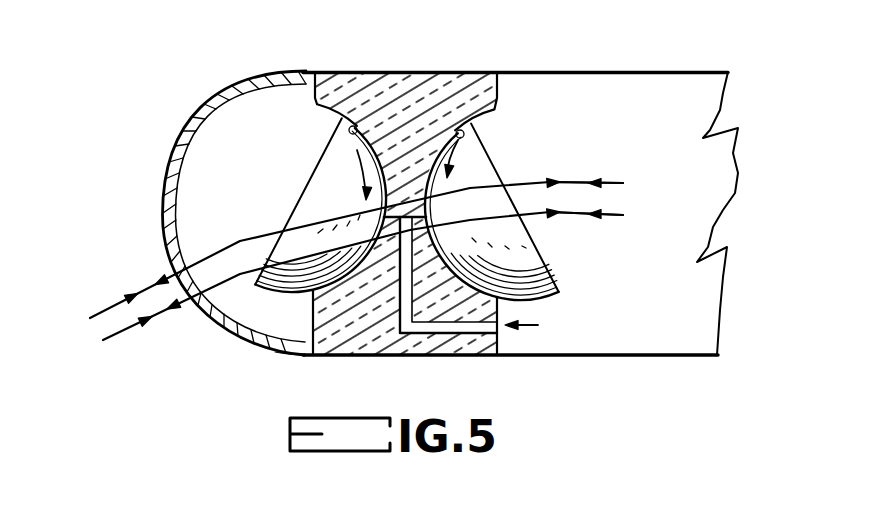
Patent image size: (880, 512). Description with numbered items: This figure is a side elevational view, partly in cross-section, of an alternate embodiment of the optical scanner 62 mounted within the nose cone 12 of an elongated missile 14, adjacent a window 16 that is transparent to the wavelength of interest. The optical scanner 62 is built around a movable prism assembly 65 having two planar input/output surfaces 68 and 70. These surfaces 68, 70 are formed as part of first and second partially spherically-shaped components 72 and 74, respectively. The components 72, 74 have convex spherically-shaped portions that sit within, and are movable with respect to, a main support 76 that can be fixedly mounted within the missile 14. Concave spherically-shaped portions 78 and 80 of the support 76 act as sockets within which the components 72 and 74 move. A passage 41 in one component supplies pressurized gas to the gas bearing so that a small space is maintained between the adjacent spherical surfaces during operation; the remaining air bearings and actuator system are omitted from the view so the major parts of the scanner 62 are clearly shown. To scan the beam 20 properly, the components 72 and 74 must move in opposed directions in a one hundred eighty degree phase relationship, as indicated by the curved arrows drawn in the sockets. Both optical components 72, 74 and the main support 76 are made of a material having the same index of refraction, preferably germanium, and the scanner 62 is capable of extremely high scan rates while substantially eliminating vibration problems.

The nose cone 12 is at (195, 179).
The missile 14 is at (510, 370).
The window 16 is at (212, 308).
The beam 20 is at (604, 198).
The passage 41 is at (388, 290).
The optical scanner 62 is at (280, 366).
The movable prism assembly 65 is at (497, 107).
The planar input/output surface 68 is at (546, 262).
The planar input/output surface 70 is at (338, 127).
The first partially spherically-shaped component 72 is at (520, 246).
The second partially spherically-shaped component 74 is at (340, 151).
The main support 76 is at (430, 82).
The concave spherically-shaped portion 78 is at (464, 124).
The concave spherically-shaped portion 80 is at (370, 100).